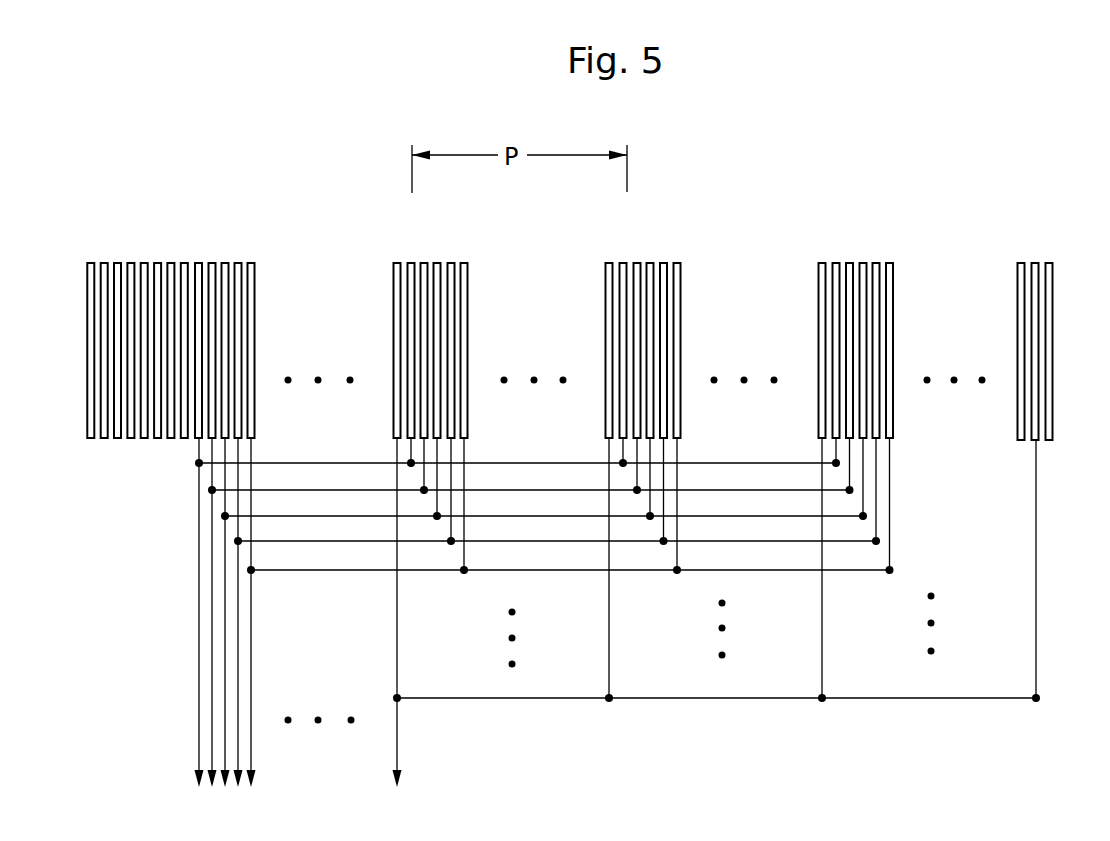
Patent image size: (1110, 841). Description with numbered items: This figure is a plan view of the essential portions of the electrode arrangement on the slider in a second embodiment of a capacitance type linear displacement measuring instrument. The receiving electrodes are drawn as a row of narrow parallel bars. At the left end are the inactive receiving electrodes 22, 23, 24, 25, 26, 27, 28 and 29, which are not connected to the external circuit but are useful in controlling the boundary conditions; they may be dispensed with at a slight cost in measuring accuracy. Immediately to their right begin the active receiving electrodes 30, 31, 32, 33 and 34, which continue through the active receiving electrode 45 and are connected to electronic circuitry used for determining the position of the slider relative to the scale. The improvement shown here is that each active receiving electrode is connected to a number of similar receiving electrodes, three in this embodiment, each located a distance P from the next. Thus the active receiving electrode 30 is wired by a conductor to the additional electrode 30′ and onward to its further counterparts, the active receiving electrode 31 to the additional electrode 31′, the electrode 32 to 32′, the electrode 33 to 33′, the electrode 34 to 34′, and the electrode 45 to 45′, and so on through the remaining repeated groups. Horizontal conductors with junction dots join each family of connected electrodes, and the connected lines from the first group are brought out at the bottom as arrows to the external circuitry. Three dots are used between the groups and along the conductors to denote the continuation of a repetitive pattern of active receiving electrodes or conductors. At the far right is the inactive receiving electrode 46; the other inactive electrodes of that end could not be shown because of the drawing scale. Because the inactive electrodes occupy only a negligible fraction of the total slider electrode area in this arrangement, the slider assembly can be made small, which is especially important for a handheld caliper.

The inactive receiving electrode 22 is at (91, 263).
The inactive receiving electrode 23 is at (104, 439).
The inactive receiving electrode 24 is at (119, 263).
The inactive receiving electrode 25 is at (131, 439).
The inactive receiving electrode 26 is at (145, 263).
The inactive receiving electrode 27 is at (158, 439).
The inactive receiving electrode 28 is at (172, 263).
The inactive receiving electrode 29 is at (185, 439).
The active receiving electrode 30 is at (198, 263).
The active receiving electrode 31 is at (211, 263).
The active receiving electrode 32 is at (225, 263).
The active receiving electrode 33 is at (238, 263).
The active receiving electrode 34 is at (252, 263).
The active receiving electrode 45 is at (396, 263).
The additional receiving electrode 30′ is at (410, 263).
The additional receiving electrode 31′ is at (424, 263).
The additional receiving electrode 32′ is at (437, 263).
The additional receiving electrode 33′ is at (451, 263).
The additional receiving electrode 34′ is at (472, 250).
The additional receiving electrode 45′ is at (609, 263).
The inactive receiving electrode 46 is at (1049, 263).